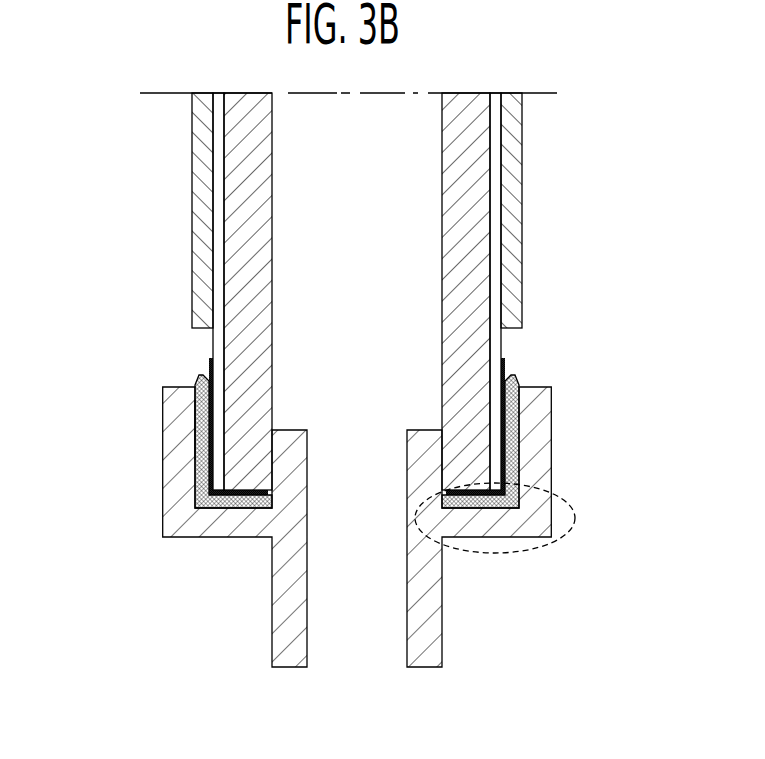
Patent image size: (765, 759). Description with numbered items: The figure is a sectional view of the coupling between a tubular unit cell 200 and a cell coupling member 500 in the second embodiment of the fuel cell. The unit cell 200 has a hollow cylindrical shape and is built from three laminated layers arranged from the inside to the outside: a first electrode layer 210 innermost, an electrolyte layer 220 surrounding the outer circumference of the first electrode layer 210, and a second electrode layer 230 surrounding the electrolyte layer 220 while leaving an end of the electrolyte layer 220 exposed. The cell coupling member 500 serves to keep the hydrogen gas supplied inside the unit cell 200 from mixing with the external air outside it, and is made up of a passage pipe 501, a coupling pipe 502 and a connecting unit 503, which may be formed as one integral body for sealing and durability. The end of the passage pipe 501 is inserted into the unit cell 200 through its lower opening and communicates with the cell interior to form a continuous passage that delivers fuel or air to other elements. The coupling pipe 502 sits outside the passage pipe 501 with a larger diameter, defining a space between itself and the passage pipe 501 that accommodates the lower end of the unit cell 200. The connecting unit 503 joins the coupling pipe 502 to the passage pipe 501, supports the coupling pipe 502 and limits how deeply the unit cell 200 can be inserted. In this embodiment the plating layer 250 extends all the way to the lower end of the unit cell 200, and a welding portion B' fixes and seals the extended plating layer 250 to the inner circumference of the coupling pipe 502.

The unit cell 200 is at (167, 176).
The first electrode layer 210 is at (237, 205).
The electrolyte layer 220 is at (220, 246).
The second electrode layer 230 is at (203, 313).
The plating layer 250 is at (198, 372).
The cell coupling member 500 is at (264, 577).
The passage pipe 501 is at (415, 584).
The coupling pipe 502 is at (175, 497).
The connecting unit 503 is at (572, 513).
The welding portion B' is at (151, 430).